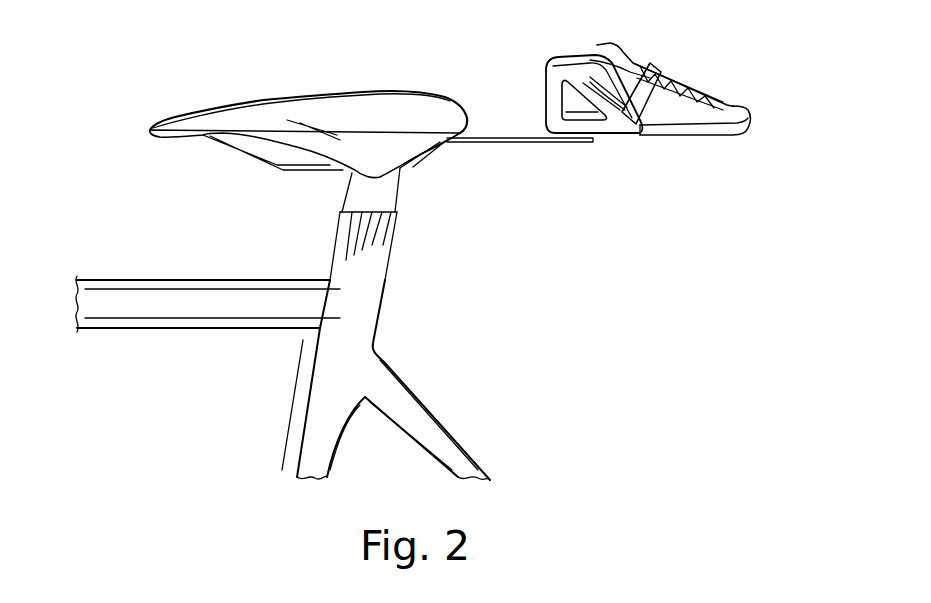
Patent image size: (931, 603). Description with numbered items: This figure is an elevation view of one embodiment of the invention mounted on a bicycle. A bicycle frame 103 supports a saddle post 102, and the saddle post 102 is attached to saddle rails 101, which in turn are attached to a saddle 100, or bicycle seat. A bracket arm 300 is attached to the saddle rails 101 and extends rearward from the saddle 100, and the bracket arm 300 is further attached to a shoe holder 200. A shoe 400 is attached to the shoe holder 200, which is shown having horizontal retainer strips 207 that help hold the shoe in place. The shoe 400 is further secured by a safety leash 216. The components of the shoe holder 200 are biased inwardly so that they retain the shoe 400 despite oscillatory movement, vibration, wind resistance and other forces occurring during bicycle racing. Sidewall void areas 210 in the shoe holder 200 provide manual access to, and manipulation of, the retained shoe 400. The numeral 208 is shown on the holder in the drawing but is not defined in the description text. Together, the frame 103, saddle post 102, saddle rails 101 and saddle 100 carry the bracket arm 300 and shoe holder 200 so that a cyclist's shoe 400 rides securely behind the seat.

The saddle 100 is at (425, 131).
The saddle rails 101 is at (245, 156).
The saddle post 102 is at (348, 187).
The bicycle frame 103 is at (250, 317).
The shoe holder 200 is at (546, 134).
The horizontal retainer strips 207 is at (597, 140).
The holder bracket 208 is at (540, 87).
The sidewall void areas 210 is at (578, 120).
The safety leash 216 is at (660, 67).
The bracket arm 300 is at (505, 143).
The shoe 400 is at (697, 71).